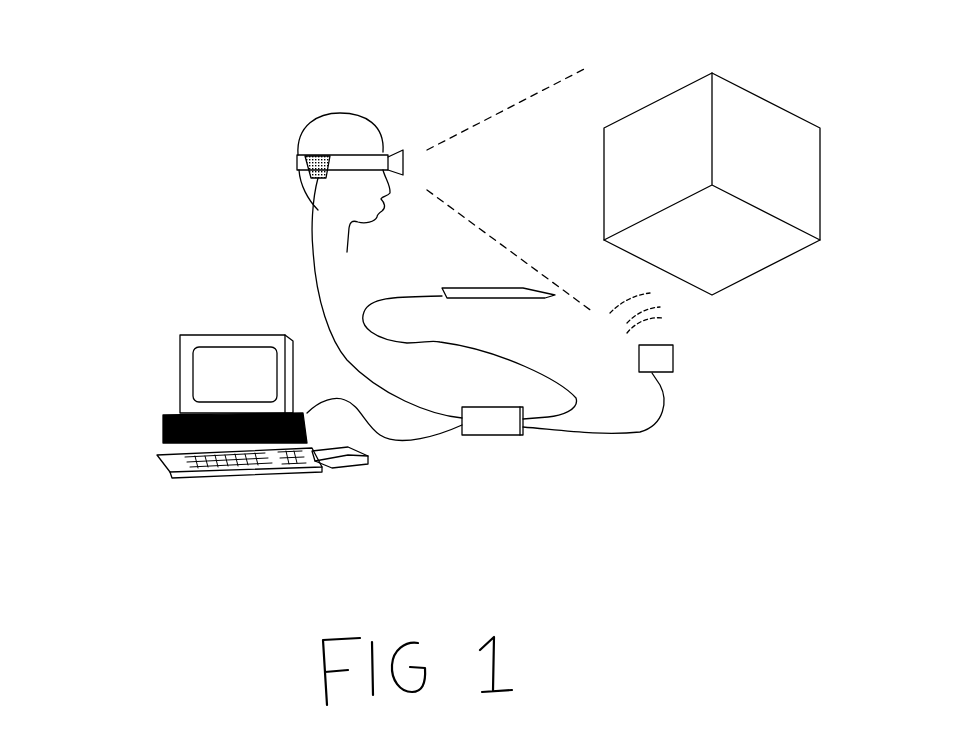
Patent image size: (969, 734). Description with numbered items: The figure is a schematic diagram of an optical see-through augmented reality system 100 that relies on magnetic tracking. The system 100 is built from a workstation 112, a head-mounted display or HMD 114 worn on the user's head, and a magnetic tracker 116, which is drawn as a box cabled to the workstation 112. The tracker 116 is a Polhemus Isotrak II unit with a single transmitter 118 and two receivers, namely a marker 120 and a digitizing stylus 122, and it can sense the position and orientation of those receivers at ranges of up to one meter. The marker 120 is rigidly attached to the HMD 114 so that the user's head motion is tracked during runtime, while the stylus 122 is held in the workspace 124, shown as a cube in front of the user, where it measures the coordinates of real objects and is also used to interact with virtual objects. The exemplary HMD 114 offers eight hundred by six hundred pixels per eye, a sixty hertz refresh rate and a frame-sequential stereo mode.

The optical see-through AR system 100 is at (210, 92).
The workstation 112 is at (165, 418).
The HMD 114 is at (415, 140).
The magnetic tracker 116 is at (523, 430).
The transmitter 118 is at (673, 358).
The marker 120 is at (292, 175).
The digitizing stylus 122 is at (472, 292).
The workspace 124 is at (725, 92).